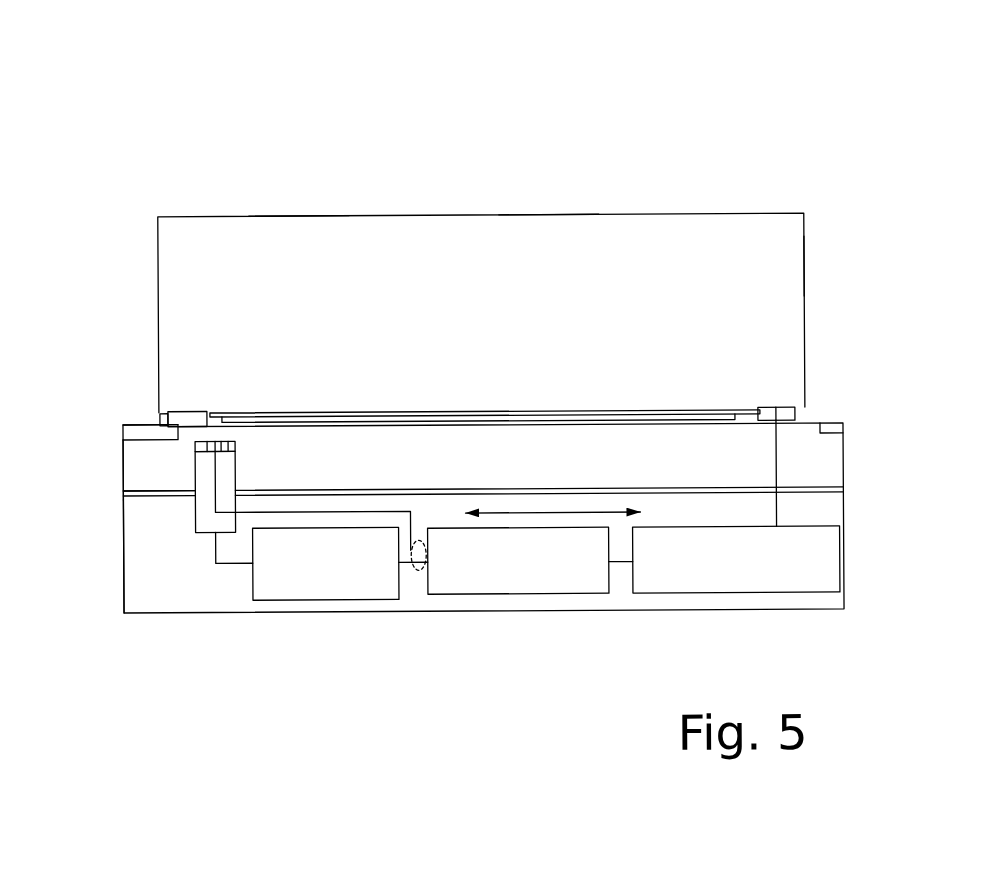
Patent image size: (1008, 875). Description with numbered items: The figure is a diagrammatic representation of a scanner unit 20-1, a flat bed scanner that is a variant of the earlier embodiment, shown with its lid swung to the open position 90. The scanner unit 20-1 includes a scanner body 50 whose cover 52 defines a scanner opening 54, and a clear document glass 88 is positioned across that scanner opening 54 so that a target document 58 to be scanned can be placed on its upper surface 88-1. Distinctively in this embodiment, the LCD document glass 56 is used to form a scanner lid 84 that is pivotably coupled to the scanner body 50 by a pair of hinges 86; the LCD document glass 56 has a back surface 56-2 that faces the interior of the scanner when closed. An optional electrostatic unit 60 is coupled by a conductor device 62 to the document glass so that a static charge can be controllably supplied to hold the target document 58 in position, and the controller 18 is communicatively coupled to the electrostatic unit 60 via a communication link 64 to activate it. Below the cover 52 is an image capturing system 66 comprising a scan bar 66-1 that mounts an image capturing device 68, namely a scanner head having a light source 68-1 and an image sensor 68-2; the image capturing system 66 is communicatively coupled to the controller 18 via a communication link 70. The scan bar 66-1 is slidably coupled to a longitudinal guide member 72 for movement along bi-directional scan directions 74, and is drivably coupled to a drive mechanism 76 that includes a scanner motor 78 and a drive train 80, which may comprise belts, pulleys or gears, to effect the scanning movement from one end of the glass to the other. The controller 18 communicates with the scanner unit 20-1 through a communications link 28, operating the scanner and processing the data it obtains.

The scanner unit 20-1 is at (552, 103).
The open position 90 is at (97, 262).
The scanner lid 84 is at (295, 209).
The LCD document glass 56 is at (772, 217).
The back surface 56-2 is at (779, 266).
The hinges 86 is at (188, 412).
The cover 52 is at (167, 414).
The target document 58 is at (360, 414).
The clear document glass 88 is at (748, 417).
The upper surface 88-1 is at (705, 417).
The image capturing device 68 is at (158, 451).
The light source 68-1 is at (203, 438).
The image sensor 68-2 is at (230, 441).
The scanner opening 54 is at (631, 443).
The bi-directional scan directions 74 is at (553, 515).
The conductor device 62 is at (778, 466).
The communication link 70 is at (338, 511).
The scanner body 50 is at (843, 542).
The longitudinal guide member 72 is at (150, 497).
The image capturing system 66 is at (120, 536).
The scan bar 66-1 is at (193, 518).
The drive mechanism 76 is at (213, 579).
The drive train 80 is at (230, 565).
The communications link 28 is at (420, 572).
The communication link 64 is at (620, 565).
The scanner motor 78 is at (387, 591).
The controller 18 is at (530, 588).
The electrostatic unit 60 is at (833, 589).